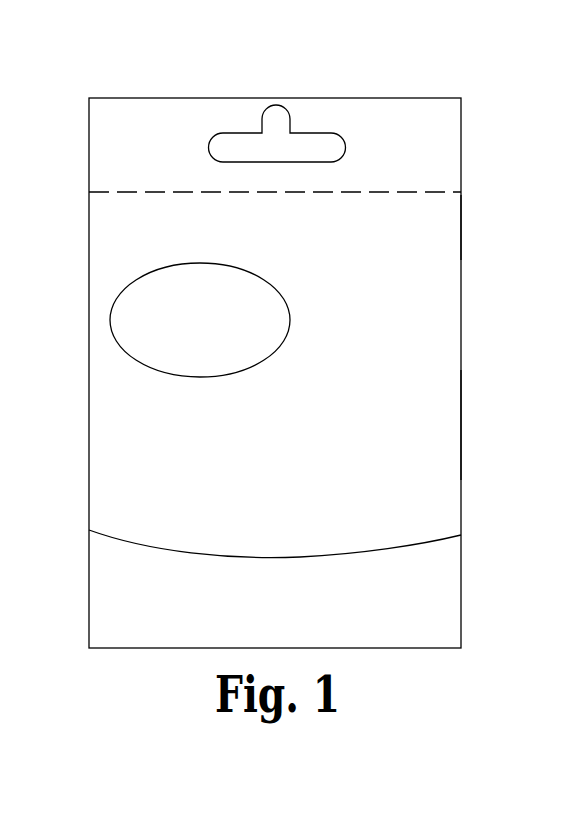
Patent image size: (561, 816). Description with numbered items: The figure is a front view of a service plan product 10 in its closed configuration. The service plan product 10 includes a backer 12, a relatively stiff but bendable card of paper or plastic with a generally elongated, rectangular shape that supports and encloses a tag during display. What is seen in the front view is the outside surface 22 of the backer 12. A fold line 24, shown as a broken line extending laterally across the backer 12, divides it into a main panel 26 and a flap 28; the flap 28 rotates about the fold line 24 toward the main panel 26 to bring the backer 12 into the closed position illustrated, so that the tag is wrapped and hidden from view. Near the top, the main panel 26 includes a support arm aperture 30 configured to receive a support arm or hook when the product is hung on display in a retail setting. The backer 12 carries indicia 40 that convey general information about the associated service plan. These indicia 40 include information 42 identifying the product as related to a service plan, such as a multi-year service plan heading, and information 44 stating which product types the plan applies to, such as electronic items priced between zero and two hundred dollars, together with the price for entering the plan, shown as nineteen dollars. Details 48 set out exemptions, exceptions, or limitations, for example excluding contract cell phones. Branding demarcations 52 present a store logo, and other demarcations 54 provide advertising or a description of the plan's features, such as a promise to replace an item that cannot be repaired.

The service plan product 10 is at (430, 70).
The backer 12 is at (437, 219).
The outside surface 22 is at (432, 402).
The fold line 24 is at (124, 192).
The main panel 26 is at (448, 583).
The flap 28 is at (442, 450).
The support arm aperture 30 is at (276, 105).
The indicia 40 is at (434, 575).
The information identifying the product as related to a service plan 42 is at (291, 475).
The information regarding applicable product types and price 44 is at (82, 592).
The details regarding exemptions, exceptions, and limitations 48 is at (184, 645).
The branding demarcations 52 is at (104, 320).
The other demarcations 54 is at (442, 504).